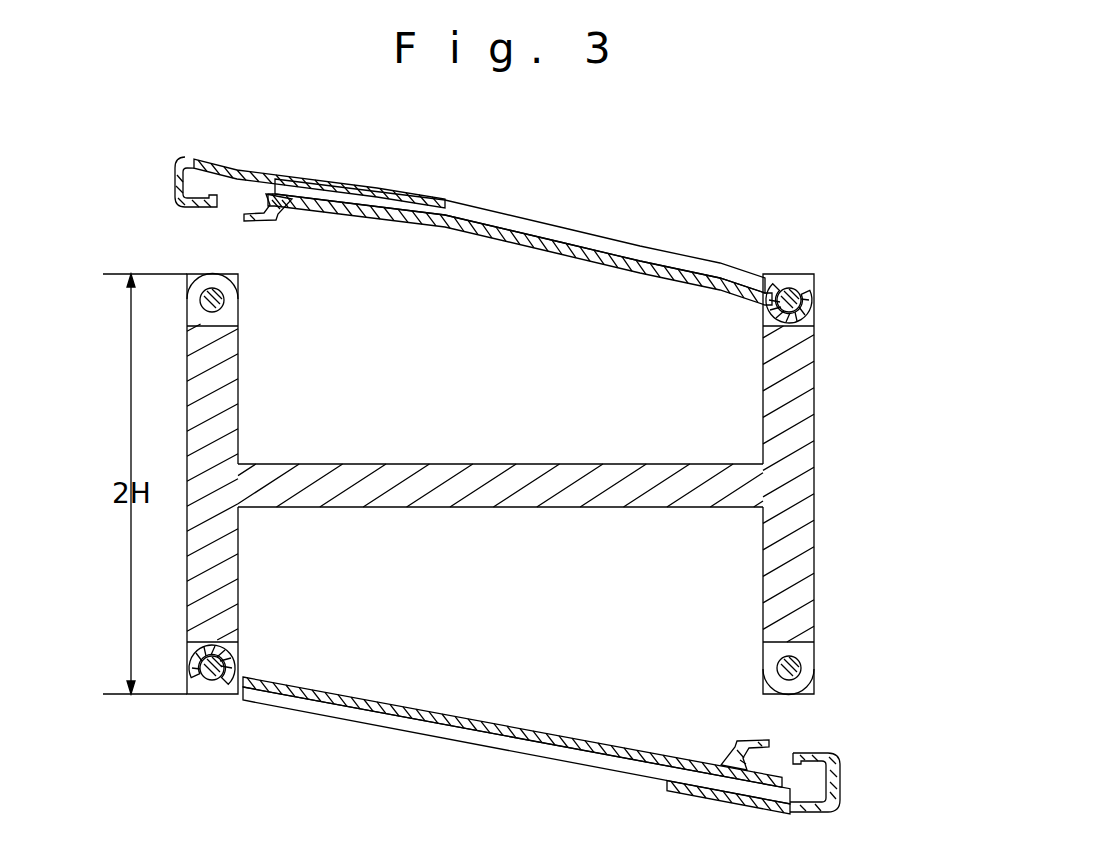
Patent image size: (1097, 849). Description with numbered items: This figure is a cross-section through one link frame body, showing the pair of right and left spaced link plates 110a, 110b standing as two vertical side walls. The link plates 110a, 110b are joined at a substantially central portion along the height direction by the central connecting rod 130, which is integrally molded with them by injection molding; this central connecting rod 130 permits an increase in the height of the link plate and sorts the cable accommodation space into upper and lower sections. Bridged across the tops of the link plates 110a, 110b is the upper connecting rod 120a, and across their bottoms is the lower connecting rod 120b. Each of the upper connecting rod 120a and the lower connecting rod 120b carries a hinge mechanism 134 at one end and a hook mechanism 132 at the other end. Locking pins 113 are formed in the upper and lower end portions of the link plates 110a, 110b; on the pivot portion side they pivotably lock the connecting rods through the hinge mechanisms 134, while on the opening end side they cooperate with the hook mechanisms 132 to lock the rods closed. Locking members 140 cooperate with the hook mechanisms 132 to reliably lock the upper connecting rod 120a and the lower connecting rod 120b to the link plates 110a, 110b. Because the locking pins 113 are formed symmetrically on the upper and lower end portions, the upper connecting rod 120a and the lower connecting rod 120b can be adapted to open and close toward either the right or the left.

The link plate 110a is at (220, 372).
The link plate 110b is at (813, 483).
The locking pin 113 is at (224, 303).
The upper connecting rod 120a is at (498, 212).
The lower connecting rod 120b is at (407, 733).
The central connecting rod 130 is at (525, 462).
The hook mechanism 132 is at (273, 212).
The hinge mechanism 134 is at (813, 311).
The locking member 140 is at (175, 172).